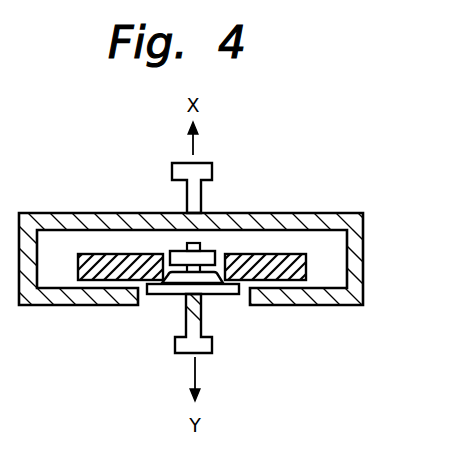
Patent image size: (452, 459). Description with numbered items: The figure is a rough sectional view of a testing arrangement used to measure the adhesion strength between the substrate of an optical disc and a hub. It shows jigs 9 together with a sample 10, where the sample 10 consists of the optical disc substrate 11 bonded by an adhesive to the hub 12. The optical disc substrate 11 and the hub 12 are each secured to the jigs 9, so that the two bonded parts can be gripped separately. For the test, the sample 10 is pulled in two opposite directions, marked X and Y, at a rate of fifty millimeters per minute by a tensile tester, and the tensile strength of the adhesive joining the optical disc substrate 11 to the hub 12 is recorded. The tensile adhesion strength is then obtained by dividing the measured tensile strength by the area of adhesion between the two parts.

The jigs 9 is at (259, 230).
The sample 10 is at (352, 132).
The optical disc substrate 11 is at (297, 253).
The hub 12 is at (224, 257).